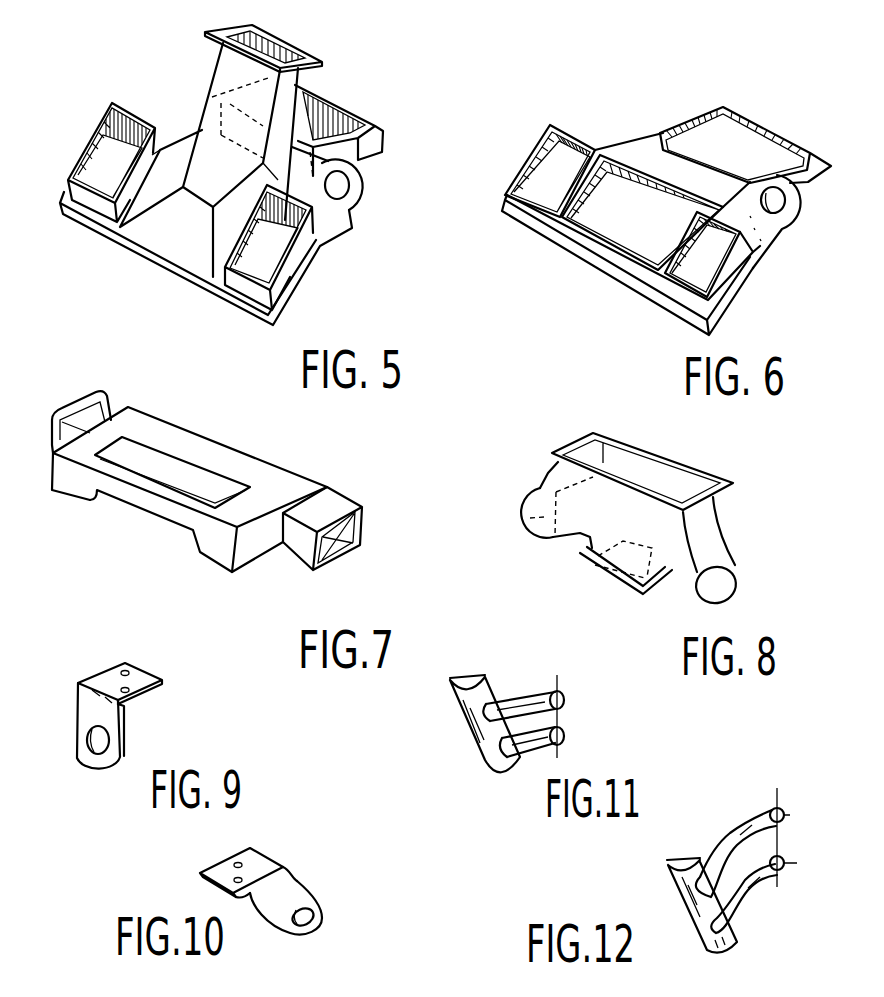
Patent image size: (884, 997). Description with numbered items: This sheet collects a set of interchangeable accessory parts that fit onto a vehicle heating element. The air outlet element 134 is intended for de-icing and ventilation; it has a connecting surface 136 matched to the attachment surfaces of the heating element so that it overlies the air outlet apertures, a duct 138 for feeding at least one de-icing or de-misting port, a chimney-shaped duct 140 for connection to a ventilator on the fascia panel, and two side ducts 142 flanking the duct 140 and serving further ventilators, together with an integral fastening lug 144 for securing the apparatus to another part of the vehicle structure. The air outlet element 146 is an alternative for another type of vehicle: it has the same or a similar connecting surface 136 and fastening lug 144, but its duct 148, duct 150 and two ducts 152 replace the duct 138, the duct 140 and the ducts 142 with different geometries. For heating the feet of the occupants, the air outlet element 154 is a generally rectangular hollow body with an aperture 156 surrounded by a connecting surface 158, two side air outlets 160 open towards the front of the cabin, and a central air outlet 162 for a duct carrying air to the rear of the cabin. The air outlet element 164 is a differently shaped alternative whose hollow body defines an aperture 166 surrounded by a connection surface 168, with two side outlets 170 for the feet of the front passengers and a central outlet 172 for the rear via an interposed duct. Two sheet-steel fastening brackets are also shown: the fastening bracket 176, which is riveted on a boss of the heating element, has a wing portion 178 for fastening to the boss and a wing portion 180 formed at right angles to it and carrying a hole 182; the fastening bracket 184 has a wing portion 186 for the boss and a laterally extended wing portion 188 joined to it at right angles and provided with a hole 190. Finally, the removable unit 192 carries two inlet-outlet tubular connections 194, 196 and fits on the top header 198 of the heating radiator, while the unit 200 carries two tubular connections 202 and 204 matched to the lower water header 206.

In FIG. 5, the air outlet element 134 is at (148, 83).
In FIG. 5, the connecting surface 136 is at (185, 282).
In FIG. 6, the connecting surface 136 is at (613, 290).
In FIG. 5, the duct 138 is at (355, 143).
In FIG. 5, the duct 140 is at (206, 114).
In FIG. 5, the side ducts 142 is at (87, 205).
In FIG. 5, the fastening lug 144 is at (340, 210).
In FIG. 6, the fastening lug 144 is at (782, 227).
In FIG. 6, the air outlet element 146 is at (630, 113).
In FIG. 6, the duct 148 is at (750, 117).
In FIG. 6, the duct 150 is at (597, 222).
In FIG. 6, the ducts 152 is at (530, 153).
In FIG. 7, the air outlet element 154 is at (120, 527).
In FIG. 7, the aperture 156 is at (173, 470).
In FIG. 7, the connecting surface 158 is at (228, 460).
In FIG. 7, the side air outlets 160 is at (58, 408).
In FIG. 7, the central air outlet 162 is at (173, 530).
In FIG. 8, the air outlet element 164 is at (577, 572).
In FIG. 8, the aperture 166 is at (688, 477).
In FIG. 8, the connection surface 168 is at (568, 445).
In FIG. 8, the side outlets 170 is at (528, 515).
In FIG. 8, the central outlet 172 is at (615, 580).
In FIG. 9, the fastening bracket 176 is at (142, 725).
In FIG. 9, the wing portion 178 is at (147, 678).
In FIG. 9, the wing portion 180 is at (85, 710).
In FIG. 9, the hole 182 is at (88, 745).
In FIG. 10, the fastening bracket 184 is at (283, 850).
In FIG. 10, the wing portion 186 is at (205, 870).
In FIG. 10, the wing portion 188 is at (297, 887).
In FIG. 10, the hole 190 is at (325, 927).
In FIG. 11, the removable unit 192 is at (462, 728).
In FIG. 11, the tubular connection 194 is at (567, 693).
In FIG. 11, the tubular connection 196 is at (567, 733).
In FIG. 11, the top header 198 is at (483, 750).
In FIG. 12, the unit 200 is at (733, 803).
In FIG. 12, the tubular connection 202 is at (783, 810).
In FIG. 12, the tubular connection 204 is at (782, 883).
In FIG. 12, the lower water header 206 is at (678, 907).